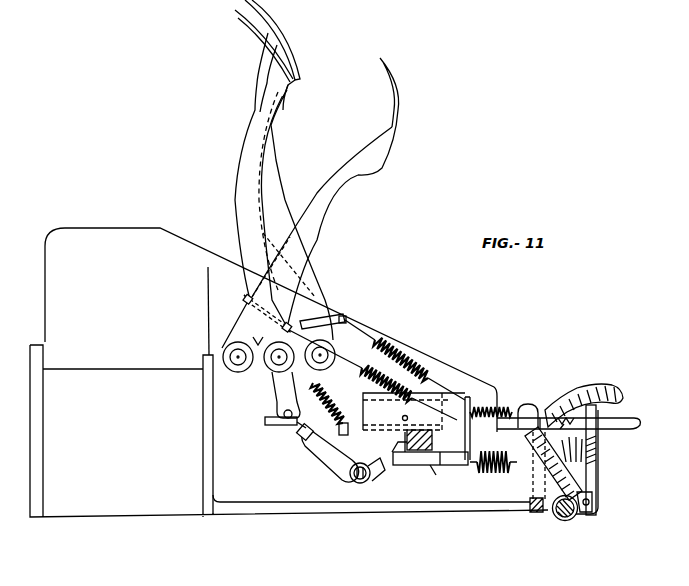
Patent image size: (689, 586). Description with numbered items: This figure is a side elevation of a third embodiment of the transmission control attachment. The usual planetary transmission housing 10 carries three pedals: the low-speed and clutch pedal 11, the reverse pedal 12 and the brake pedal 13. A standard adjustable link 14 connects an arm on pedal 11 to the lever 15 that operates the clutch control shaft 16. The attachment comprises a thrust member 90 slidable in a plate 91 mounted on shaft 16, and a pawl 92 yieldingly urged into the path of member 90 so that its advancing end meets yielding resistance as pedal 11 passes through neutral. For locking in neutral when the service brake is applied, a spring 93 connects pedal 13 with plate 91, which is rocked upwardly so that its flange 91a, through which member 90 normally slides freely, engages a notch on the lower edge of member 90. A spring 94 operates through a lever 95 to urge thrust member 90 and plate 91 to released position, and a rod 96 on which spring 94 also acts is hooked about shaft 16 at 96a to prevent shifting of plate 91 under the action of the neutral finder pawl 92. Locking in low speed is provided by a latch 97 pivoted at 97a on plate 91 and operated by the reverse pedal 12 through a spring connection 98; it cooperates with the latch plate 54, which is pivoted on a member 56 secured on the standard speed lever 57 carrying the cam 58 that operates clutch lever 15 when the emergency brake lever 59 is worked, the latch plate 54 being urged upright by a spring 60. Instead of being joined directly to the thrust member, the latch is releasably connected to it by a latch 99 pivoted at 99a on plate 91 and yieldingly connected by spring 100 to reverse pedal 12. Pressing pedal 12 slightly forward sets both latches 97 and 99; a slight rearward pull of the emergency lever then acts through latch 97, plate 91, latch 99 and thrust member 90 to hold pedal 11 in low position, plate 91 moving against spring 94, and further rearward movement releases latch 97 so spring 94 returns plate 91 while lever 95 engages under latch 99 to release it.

The housing 10 is at (100, 238).
The low-speed and clutch pedal 11 is at (243, 174).
The reverse pedal 12 is at (323, 216).
The brake pedal 13 is at (272, 179).
The adjustable link 14 is at (297, 424).
The lever 15 is at (372, 475).
The clutch control shaft 16 is at (432, 468).
The latch plate 54 is at (590, 476).
The member 56 is at (576, 393).
The standard speed lever 57 is at (536, 500).
The cam 58 is at (524, 410).
The emergency brake lever 59 is at (566, 521).
The spring 60 is at (560, 453).
The thrust member 90 is at (353, 410).
The plate 91 is at (443, 397).
The flange 91a is at (467, 397).
The pawl 92 is at (470, 406).
The spring 93 is at (402, 356).
The spring 94 is at (503, 474).
The lever 95 is at (433, 429).
The rod 96 is at (440, 466).
The hook 96a is at (404, 462).
The latch 97 is at (631, 424).
The pivot 97a is at (456, 465).
The spring connection 98 is at (373, 368).
The latch 99 is at (350, 434).
The pivot 99a is at (402, 418).
The spring 100 is at (314, 388).